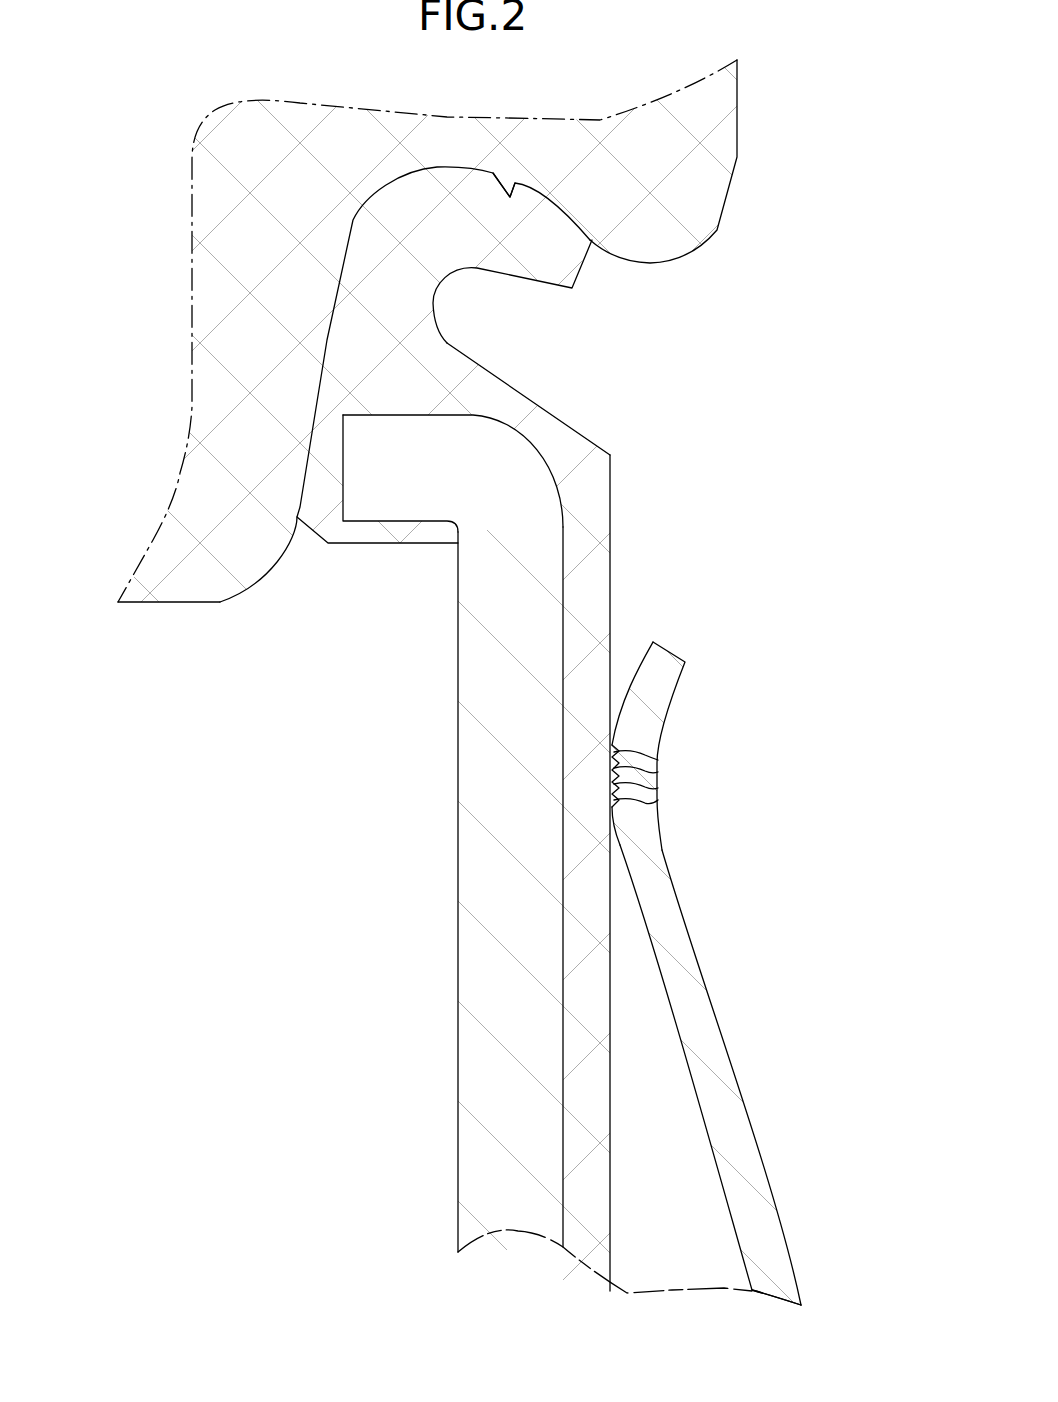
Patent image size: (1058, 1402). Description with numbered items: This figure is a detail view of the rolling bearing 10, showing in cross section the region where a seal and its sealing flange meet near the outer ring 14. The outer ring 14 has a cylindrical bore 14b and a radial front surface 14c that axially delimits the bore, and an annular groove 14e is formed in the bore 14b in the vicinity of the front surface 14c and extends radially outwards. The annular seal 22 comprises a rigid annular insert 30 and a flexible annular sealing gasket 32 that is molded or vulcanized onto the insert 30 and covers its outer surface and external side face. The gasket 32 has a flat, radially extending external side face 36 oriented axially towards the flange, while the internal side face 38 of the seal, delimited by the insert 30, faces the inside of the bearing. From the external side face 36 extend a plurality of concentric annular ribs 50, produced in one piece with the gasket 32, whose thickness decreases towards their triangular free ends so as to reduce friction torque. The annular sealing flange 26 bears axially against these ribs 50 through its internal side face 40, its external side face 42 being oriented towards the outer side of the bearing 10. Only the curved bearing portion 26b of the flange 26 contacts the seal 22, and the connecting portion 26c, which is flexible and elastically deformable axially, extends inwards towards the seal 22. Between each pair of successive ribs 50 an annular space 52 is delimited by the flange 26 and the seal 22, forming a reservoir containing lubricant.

The rolling bearing 10 is at (170, 680).
The outer ring 14 is at (430, 114).
The cylindrical bore 14b is at (169, 604).
The radial front surface 14c is at (738, 109).
The annular groove 14e is at (511, 190).
The annular seal 22 is at (627, 436).
The annular sealing flange 26 is at (738, 1071).
The bearing portion 26b is at (652, 727).
The connecting portion 26c is at (758, 1159).
The insert 30 is at (458, 770).
The sealing gasket 32 is at (612, 593).
The external side face 36 is at (612, 623).
The internal side face 38 is at (458, 893).
The internal side face 40 is at (738, 1237).
The external side face 42 is at (704, 971).
The annular ribs 50 is at (658, 760).
The annular space 52 is at (658, 800).